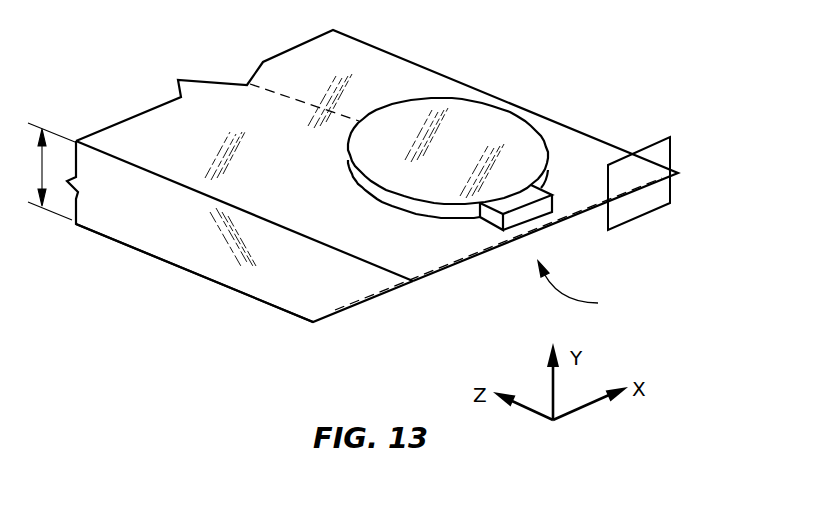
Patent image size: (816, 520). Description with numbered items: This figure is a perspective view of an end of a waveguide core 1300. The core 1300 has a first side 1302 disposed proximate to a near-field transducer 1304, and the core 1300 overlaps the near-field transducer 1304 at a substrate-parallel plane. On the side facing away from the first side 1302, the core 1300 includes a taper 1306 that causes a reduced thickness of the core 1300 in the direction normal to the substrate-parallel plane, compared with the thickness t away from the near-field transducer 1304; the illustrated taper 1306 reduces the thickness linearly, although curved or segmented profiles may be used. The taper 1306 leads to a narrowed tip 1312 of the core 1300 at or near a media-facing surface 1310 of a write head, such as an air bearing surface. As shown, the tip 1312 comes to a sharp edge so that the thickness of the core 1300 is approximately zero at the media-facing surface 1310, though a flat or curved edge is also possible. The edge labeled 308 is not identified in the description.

The bottom edge of substrate 308 is at (273, 307).
The waveguide core 1300 is at (130, 228).
The first side 1302 is at (365, 68).
The near-field transducer 1304 is at (503, 117).
The taper 1306 is at (589, 289).
The media-facing surface 1310 is at (652, 208).
The narrowed tip 1312 is at (447, 277).